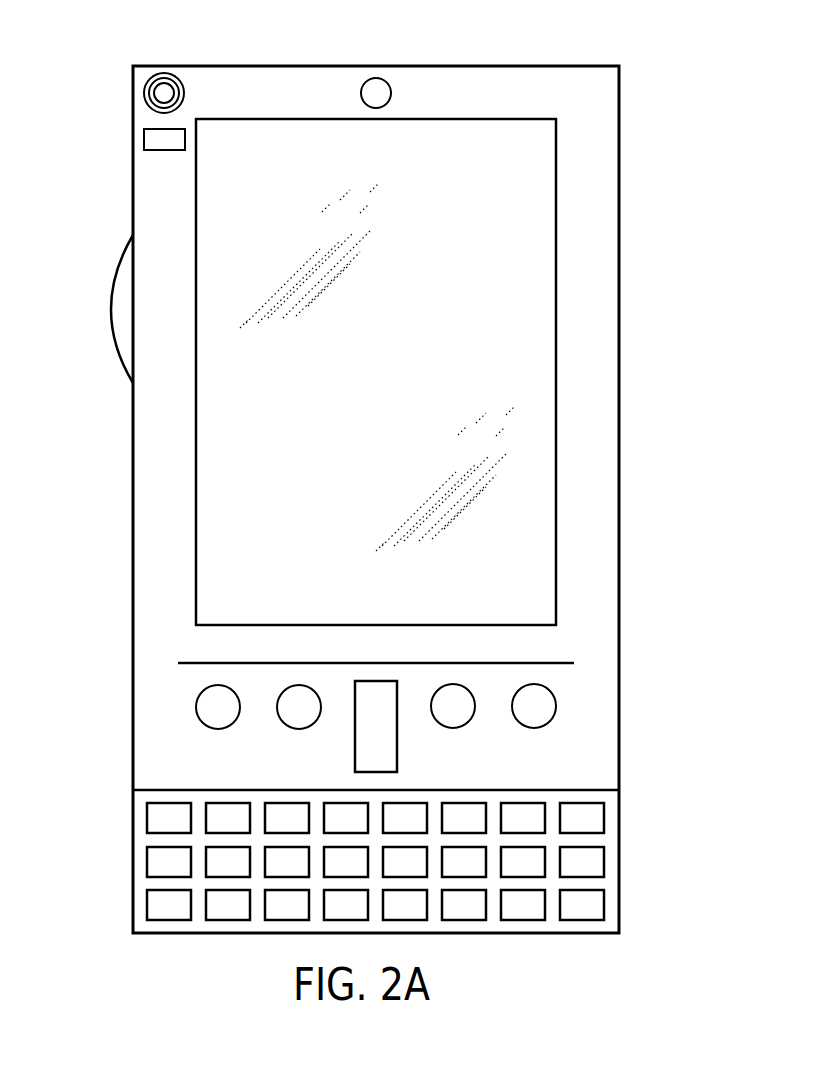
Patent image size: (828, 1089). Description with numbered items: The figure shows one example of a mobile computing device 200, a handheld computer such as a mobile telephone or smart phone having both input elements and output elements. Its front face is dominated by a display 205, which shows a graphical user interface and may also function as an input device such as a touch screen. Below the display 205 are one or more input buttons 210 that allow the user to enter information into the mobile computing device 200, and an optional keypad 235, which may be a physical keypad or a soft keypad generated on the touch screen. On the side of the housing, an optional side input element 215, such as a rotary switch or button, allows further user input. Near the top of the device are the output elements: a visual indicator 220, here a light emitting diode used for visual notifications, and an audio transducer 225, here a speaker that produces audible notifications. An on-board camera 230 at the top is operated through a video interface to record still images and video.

The mobile computing device 200 is at (619, 160).
The display 205 is at (228, 496).
The input buttons 210 is at (372, 730).
The side input element 215 is at (110, 310).
The visual indicator 220 is at (145, 140).
The audio transducer 225 is at (144, 95).
The on-board camera 230 is at (376, 78).
The keypad 235 is at (135, 868).